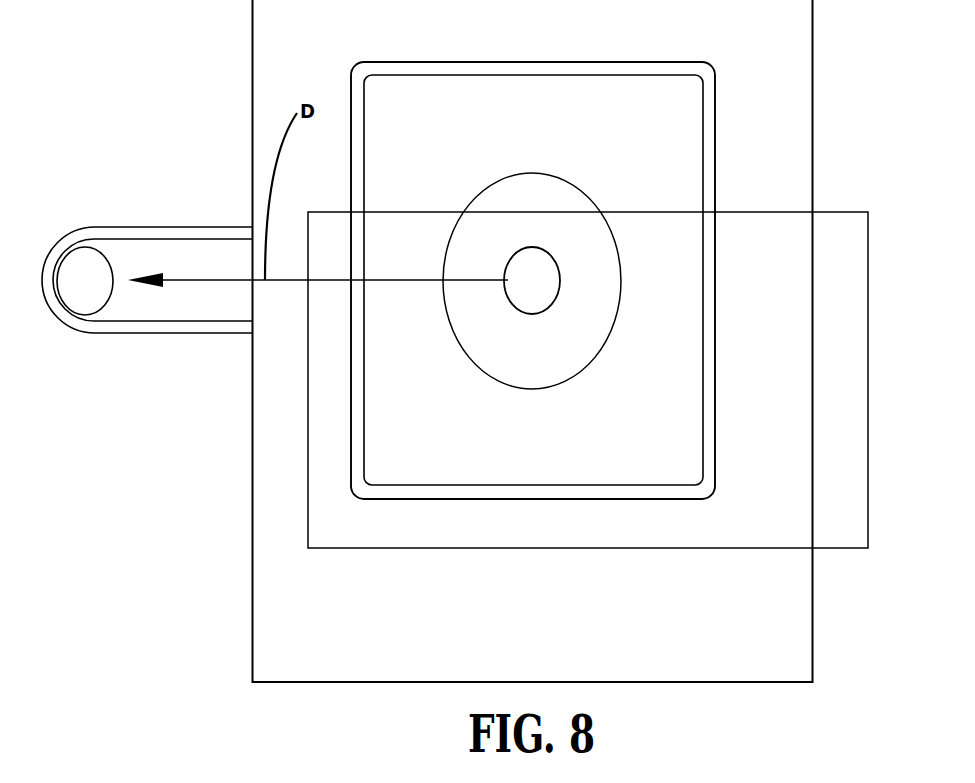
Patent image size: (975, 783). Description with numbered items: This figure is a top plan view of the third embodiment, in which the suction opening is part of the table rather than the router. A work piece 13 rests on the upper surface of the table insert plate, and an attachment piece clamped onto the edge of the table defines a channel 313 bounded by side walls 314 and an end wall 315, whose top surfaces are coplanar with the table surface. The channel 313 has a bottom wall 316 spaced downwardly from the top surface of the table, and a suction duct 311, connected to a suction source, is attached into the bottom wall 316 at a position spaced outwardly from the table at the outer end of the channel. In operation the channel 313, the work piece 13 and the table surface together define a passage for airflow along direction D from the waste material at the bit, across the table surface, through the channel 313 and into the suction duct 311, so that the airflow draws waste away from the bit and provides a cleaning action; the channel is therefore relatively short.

The work piece 13 is at (845, 280).
The suction duct 311 is at (88, 280).
The channel 313 is at (185, 255).
The side walls 314 is at (107, 327).
The end wall 315 is at (40, 280).
The bottom wall 316 is at (207, 303).